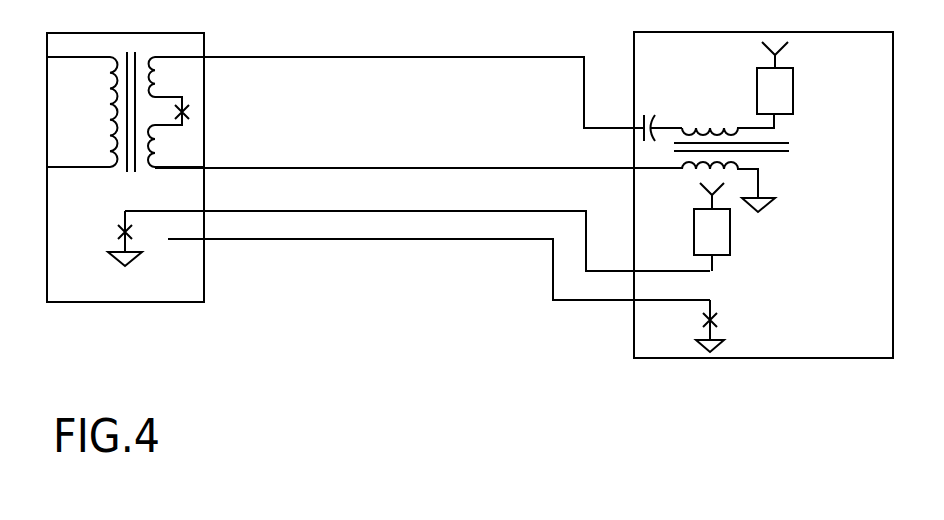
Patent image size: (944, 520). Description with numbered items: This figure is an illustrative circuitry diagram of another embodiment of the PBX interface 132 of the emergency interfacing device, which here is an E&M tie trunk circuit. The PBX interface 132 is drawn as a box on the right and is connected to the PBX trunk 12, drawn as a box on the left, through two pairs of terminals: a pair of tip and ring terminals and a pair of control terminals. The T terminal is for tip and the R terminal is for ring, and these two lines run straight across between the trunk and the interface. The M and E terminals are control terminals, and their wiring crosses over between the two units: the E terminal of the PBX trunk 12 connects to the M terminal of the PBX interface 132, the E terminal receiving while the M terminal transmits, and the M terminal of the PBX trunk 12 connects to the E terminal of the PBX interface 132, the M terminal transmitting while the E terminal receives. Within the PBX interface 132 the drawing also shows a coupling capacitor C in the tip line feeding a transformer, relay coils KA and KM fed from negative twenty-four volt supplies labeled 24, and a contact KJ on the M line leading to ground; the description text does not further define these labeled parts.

The PBX trunk 12 is at (137, 302).
The PBX interface 132 is at (763, 225).
The T terminal T is at (399, 77).
The R terminal R is at (418, 156).
The M terminal M is at (417, 245).
The E terminal E is at (439, 257).
The coupling capacitor C is at (663, 113).
The relay KA coil KA is at (775, 91).
The relay KM coil KM is at (712, 240).
The relay KJ contact KJ is at (720, 322).
The -24V supply 24 is at (754, 123).